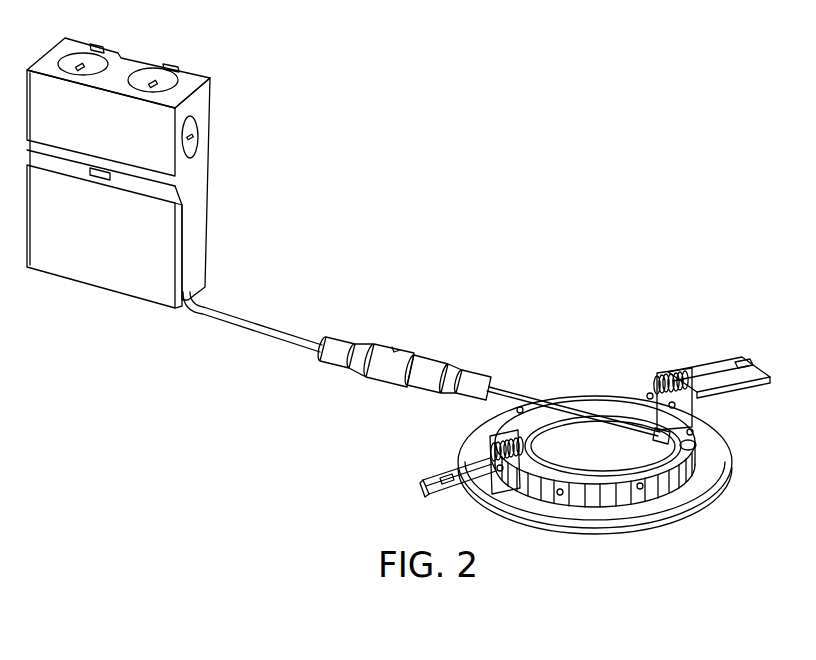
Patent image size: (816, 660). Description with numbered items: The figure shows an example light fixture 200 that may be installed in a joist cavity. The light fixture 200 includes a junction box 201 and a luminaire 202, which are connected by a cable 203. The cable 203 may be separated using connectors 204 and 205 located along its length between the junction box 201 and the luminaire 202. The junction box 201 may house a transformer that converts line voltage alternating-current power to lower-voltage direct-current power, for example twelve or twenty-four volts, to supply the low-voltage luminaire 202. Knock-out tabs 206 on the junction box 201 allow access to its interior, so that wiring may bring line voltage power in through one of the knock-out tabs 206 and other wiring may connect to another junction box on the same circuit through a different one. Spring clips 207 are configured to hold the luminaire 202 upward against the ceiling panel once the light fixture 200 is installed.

The light fixture 200 is at (456, 163).
The junction box 201 is at (204, 218).
The luminaire 202 is at (590, 398).
The cable 203 is at (272, 325).
The connector 204 is at (390, 352).
The connector 205 is at (441, 370).
The knock-out tabs 206 is at (148, 72).
The spring clips 207 is at (423, 481).